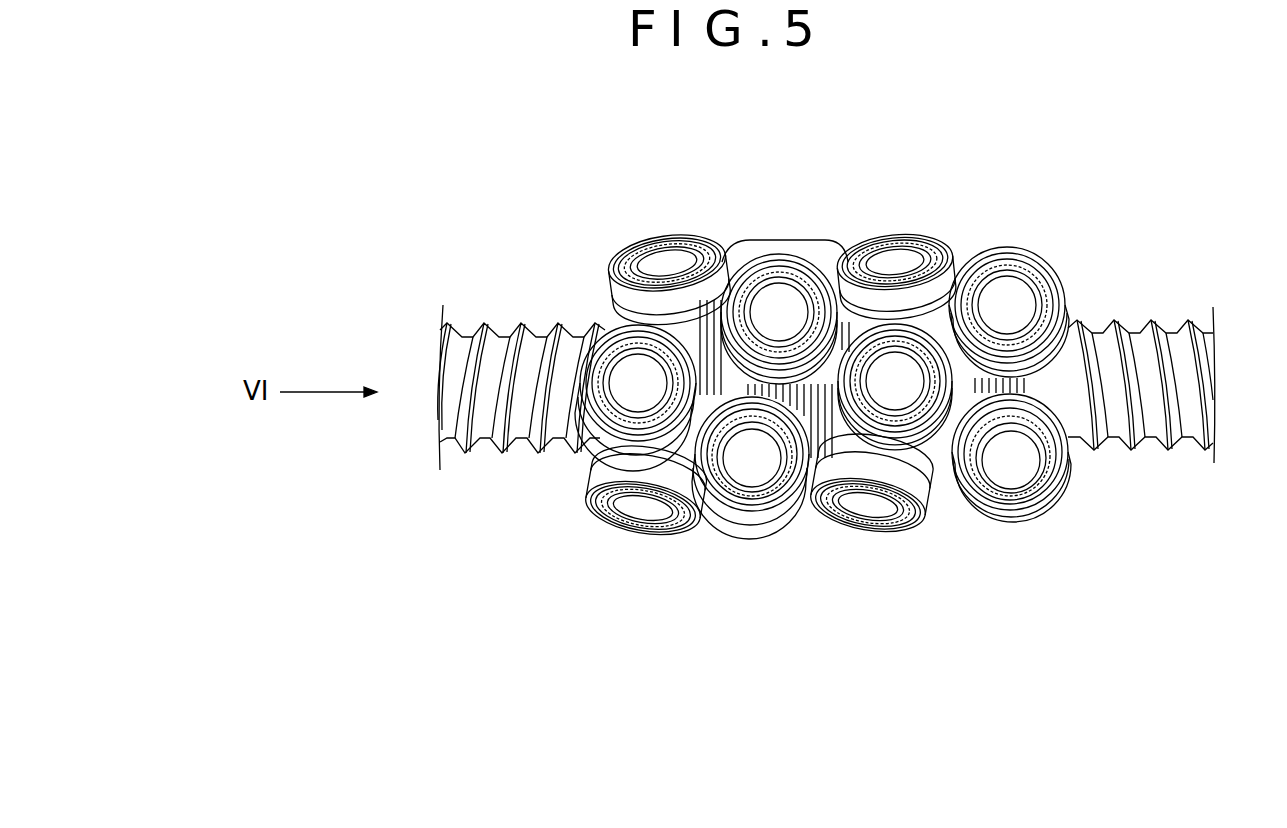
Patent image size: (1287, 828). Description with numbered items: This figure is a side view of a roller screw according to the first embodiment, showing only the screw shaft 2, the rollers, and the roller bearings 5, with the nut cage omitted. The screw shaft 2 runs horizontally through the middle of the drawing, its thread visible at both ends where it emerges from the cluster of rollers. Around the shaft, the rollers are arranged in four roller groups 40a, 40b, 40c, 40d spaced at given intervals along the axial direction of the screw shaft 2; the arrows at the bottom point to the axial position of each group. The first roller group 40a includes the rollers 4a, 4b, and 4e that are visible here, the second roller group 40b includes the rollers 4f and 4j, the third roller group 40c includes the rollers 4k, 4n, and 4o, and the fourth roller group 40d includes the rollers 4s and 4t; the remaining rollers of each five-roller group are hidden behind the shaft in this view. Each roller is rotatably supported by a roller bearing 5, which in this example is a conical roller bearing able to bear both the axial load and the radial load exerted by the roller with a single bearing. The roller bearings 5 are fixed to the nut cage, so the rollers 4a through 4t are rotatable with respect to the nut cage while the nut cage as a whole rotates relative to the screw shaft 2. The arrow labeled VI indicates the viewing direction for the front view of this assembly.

The screw shaft 2 is at (460, 325).
The roller 4a is at (603, 413).
The roller 4b is at (640, 518).
The roller 4e is at (658, 258).
The roller 4f is at (750, 478).
The roller 4j is at (774, 300).
The roller 4k is at (868, 508).
The roller 4n is at (886, 258).
The roller 4o is at (904, 360).
The roller 4s is at (1030, 260).
The roller 4t is at (1008, 472).
The roller bearing 5 is at (604, 268).
The first roller group 40a is at (638, 592).
The second roller group 40b is at (745, 602).
The third roller group 40c is at (865, 614).
The fourth roller group 40d is at (983, 602).